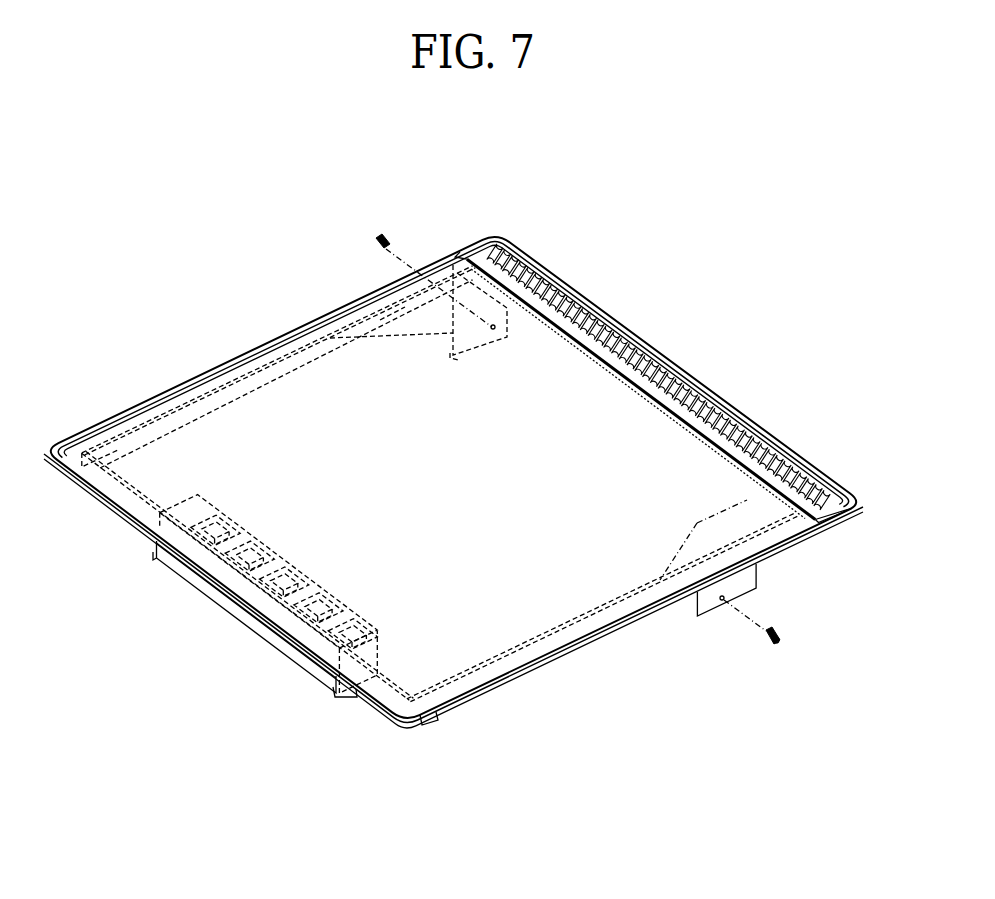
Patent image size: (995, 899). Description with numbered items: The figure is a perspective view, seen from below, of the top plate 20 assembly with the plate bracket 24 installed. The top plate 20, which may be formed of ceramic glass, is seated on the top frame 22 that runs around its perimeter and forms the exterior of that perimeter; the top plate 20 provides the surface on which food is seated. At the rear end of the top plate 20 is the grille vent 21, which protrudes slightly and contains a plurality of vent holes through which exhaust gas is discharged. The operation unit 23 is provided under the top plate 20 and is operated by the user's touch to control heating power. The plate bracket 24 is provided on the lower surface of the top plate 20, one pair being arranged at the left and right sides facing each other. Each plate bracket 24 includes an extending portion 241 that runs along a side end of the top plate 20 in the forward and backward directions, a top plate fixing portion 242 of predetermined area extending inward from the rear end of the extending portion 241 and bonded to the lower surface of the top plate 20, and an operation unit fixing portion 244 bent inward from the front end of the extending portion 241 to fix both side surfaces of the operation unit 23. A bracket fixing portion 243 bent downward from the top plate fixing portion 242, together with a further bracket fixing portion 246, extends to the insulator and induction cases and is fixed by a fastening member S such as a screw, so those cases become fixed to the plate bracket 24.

The top plate 20 is at (480, 642).
The grille vent 21 is at (664, 352).
The top frame 22 is at (103, 419).
The operation unit 23 is at (241, 621).
The plate bracket 24 is at (318, 339).
The extending portion 241 is at (285, 373).
The top plate fixing portion 242 is at (383, 317).
The bracket fixing portion 243 is at (453, 270).
The operation unit fixing portion 244 is at (120, 520).
The bracket fixing portion 246 is at (703, 609).
The fastening member S is at (381, 241).